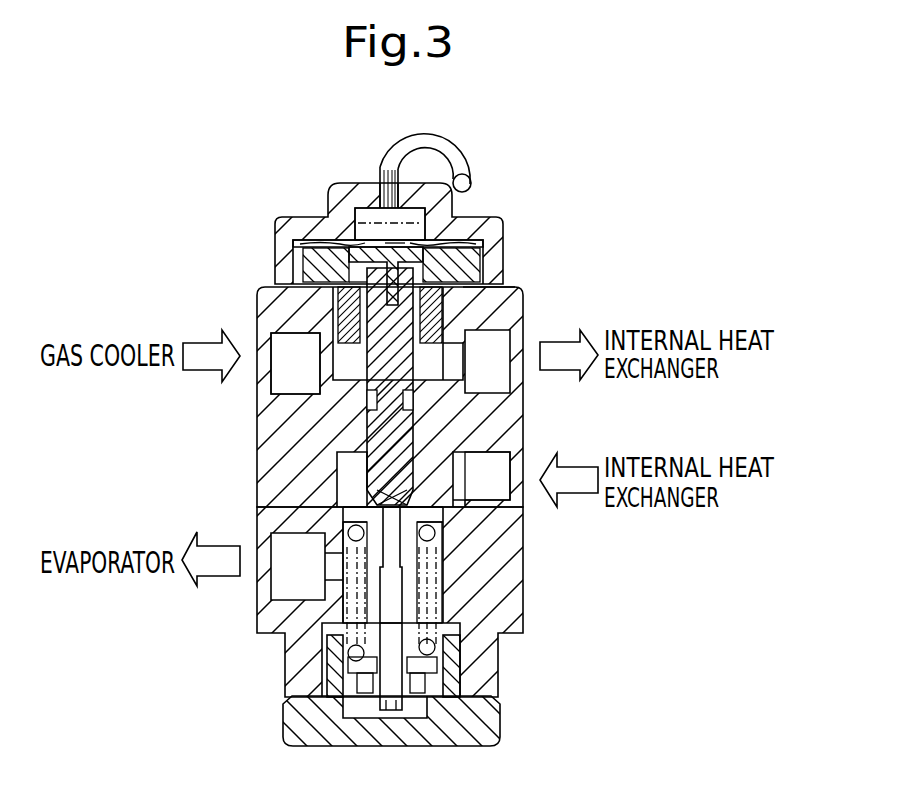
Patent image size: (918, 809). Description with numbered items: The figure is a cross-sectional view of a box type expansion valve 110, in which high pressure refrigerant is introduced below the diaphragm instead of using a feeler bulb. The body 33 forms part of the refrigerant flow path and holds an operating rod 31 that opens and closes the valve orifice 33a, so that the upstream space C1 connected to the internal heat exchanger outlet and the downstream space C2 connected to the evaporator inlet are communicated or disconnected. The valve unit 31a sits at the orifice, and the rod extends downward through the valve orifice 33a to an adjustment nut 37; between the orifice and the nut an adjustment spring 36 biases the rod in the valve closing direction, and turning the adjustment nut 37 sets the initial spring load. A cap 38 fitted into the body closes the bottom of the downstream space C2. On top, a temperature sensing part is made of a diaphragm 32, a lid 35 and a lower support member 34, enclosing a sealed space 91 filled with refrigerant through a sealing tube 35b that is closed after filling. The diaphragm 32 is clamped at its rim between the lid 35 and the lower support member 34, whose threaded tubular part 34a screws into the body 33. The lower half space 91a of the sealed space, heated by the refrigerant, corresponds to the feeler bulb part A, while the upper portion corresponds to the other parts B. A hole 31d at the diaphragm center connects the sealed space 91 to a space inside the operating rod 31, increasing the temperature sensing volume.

The expansion valve 110 is at (204, 182).
The lid 35 is at (347, 200).
The sealing tube 35b is at (430, 134).
The sealed space 91 is at (378, 214).
The space of the bottom half of the diaphragm 91a is at (407, 238).
The diaphragm 32 is at (470, 210).
The part corresponding to the feeler bulb A is at (393, 236).
The other parts B is at (345, 283).
The lower support member 34 is at (490, 253).
The tubular part 34a is at (343, 305).
The operating rod 31 is at (522, 297).
The hole 31d is at (478, 295).
The valve unit 31a is at (380, 498).
The upstream space C1 is at (288, 374).
The downstream space C2 is at (485, 492).
The body 33 is at (485, 568).
The valve orifice 33a is at (372, 514).
The adjustment spring 36 is at (457, 645).
The adjustment nut 37 is at (432, 670).
The cap 38 is at (463, 737).